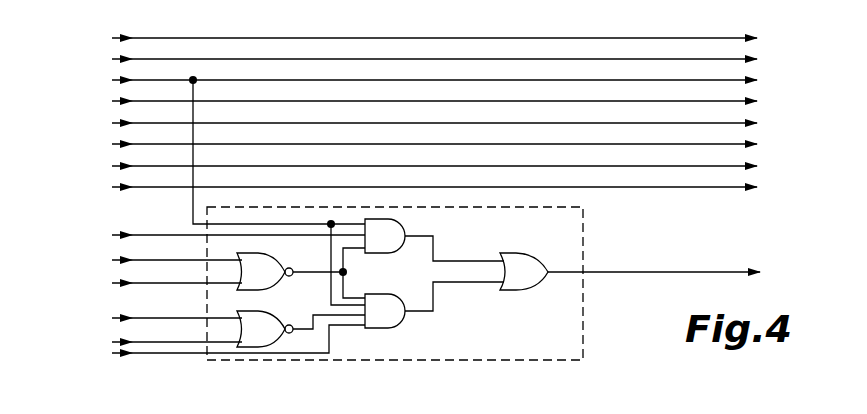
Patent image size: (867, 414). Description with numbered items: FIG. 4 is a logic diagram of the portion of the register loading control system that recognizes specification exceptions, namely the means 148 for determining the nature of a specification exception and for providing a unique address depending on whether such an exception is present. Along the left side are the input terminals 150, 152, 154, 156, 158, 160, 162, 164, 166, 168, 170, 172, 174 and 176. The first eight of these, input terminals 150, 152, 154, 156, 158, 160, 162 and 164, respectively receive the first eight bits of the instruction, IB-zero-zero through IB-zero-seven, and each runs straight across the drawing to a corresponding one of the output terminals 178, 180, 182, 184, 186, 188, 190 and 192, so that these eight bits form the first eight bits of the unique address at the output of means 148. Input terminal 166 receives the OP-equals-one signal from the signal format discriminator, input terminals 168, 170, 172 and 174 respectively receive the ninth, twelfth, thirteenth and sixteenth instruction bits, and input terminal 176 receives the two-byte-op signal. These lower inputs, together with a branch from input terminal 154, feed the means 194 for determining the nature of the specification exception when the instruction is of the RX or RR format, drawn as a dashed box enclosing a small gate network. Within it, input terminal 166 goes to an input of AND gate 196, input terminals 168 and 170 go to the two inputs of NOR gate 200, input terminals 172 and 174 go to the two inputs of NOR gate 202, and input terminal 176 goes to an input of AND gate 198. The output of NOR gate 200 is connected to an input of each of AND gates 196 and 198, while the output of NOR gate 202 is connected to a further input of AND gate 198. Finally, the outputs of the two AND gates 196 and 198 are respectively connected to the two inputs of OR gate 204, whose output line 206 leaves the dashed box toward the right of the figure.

The means for determining the nature of the specification exception 148 is at (605, 315).
The input terminal 150 is at (140, 38).
The input terminal 152 is at (140, 59).
The input terminal 154 is at (140, 80).
The input terminal 156 is at (140, 101).
The input terminal 158 is at (140, 123).
The input terminal 160 is at (140, 144).
The input terminal 162 is at (140, 166).
The input terminal 164 is at (140, 187).
The input terminal 166 is at (140, 235).
The input terminal 168 is at (140, 260).
The input terminal 170 is at (140, 283).
The input terminal 172 is at (140, 318).
The input terminal 174 is at (140, 342).
The input terminal 176 is at (142, 354).
The output terminal 178 is at (757, 38).
The output terminal 180 is at (757, 59).
The output terminal 182 is at (757, 80).
The output terminal 184 is at (757, 101).
The output terminal 186 is at (757, 123).
The output terminal 188 is at (757, 144).
The output terminal 190 is at (757, 166).
The output terminal 192 is at (757, 187).
The means for determining the nature of the specification exception 194 is at (586, 228).
The AND gate 196 is at (408, 229).
The AND gate 198 is at (405, 322).
The NOR gate 200 is at (273, 254).
The NOR gate 202 is at (274, 311).
The OR gate 204 is at (521, 253).
The output line 206 is at (760, 272).